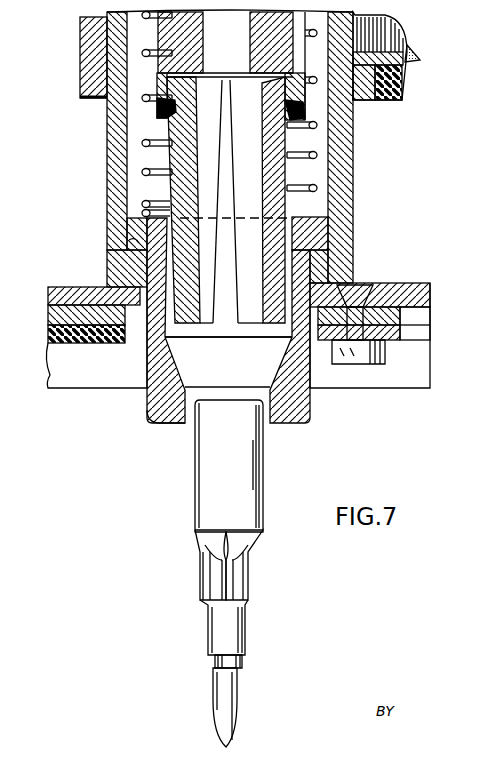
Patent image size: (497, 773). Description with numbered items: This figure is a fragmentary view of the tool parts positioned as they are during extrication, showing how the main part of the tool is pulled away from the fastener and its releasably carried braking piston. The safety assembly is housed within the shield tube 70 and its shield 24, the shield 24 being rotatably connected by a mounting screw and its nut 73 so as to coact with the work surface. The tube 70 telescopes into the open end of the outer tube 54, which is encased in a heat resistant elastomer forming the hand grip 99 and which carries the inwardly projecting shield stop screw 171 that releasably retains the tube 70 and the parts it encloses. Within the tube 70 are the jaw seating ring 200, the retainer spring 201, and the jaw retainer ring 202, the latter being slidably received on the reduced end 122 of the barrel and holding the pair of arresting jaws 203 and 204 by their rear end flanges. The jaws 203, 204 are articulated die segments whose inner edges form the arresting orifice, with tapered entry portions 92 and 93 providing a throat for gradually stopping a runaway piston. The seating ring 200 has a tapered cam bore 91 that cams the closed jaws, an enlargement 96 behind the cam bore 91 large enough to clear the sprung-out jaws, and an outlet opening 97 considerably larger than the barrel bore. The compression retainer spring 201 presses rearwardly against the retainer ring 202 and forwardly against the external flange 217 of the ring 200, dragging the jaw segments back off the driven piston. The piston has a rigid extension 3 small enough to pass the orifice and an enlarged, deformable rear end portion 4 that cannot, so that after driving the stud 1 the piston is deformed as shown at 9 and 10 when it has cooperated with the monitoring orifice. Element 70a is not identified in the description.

The outer tube 54 is at (95, 48).
The hand grip 99 is at (80, 70).
The reduced end of the barrel 122 is at (258, 38).
The shield stop screw 171 is at (388, 35).
The jaw retainer ring 202 is at (158, 80).
The retainer spring 201 is at (313, 166).
The arresting jaw 203 is at (172, 178).
The arresting jaw 204 is at (317, 184).
The external flange of the seating ring 217 is at (318, 236).
The shield tube 70 is at (353, 252).
The housing lower portion 70a is at (352, 264).
The entry portion of the orifice 92 is at (200, 300).
The entry portion of the orifice 93 is at (251, 298).
The nut 73 is at (386, 355).
The shield 24 is at (400, 390).
The jaw seating ring 200 is at (140, 376).
The enlargement 96 is at (300, 335).
The tapered cam bore 91 is at (270, 375).
The outlet opening 97 is at (190, 425).
The rear end piston portion 4 is at (263, 460).
The deformation of the piston 9 is at (203, 570).
The deformation of the piston 10 is at (245, 575).
The rigid extension 3 is at (216, 625).
The stud 1 is at (216, 697).